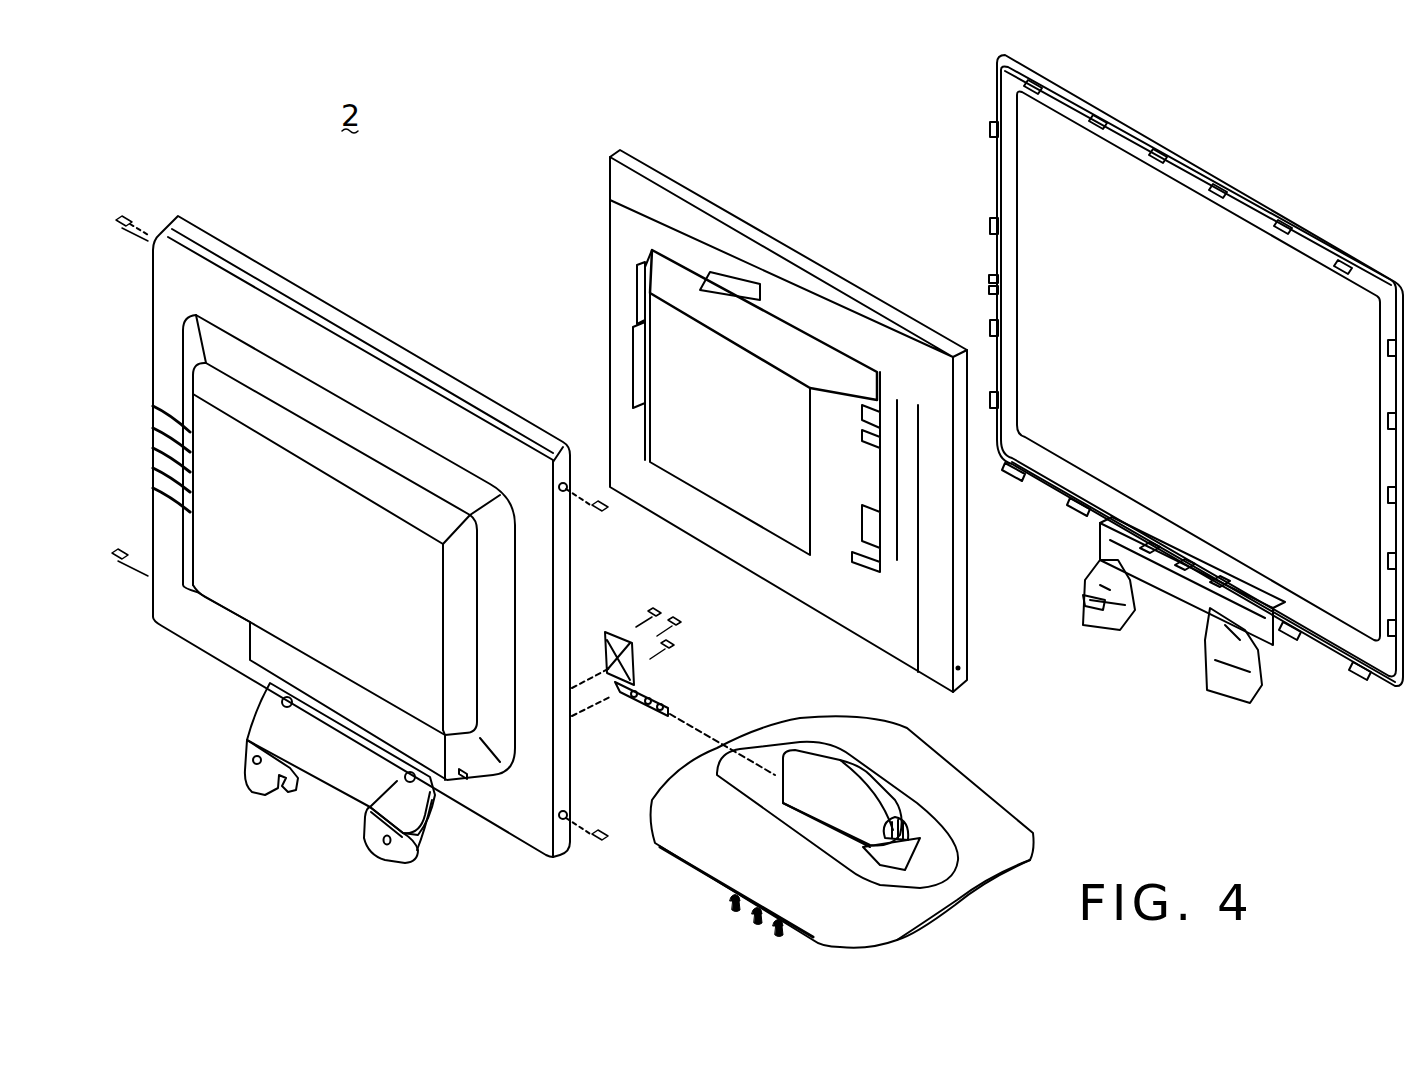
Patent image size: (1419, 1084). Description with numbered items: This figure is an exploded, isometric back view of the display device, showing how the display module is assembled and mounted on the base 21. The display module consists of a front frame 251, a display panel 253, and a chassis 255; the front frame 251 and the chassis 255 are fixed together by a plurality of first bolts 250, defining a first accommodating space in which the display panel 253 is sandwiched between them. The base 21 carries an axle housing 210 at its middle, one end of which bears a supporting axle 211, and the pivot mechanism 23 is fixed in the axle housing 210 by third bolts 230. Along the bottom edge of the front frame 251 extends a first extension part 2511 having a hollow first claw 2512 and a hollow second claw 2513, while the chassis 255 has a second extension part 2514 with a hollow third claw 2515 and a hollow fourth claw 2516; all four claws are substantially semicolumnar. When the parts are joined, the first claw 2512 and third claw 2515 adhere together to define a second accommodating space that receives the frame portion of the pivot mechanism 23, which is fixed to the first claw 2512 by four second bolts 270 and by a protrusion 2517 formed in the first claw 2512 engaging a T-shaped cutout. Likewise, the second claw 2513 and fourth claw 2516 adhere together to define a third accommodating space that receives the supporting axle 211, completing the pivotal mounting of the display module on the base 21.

The base 21 is at (1018, 803).
The pivot mechanism 23 is at (648, 694).
The axle housing 210 is at (857, 795).
The supporting axle 211 is at (900, 822).
The third bolts 230 is at (730, 901).
The first bolts 250 is at (128, 216).
The front frame 251 is at (968, 141).
The display panel 253 is at (618, 178).
The chassis 255 is at (362, 312).
The second bolts 270 is at (673, 645).
The first extension part 2511 is at (1185, 640).
The first claw 2512 is at (1110, 615).
The second claw 2513 is at (1218, 702).
The second extension part 2514 is at (345, 772).
The third claw 2515 is at (262, 775).
The fourth claw 2516 is at (372, 852).
The protrusion 2517 is at (1090, 603).